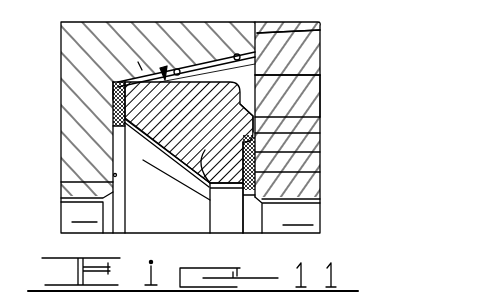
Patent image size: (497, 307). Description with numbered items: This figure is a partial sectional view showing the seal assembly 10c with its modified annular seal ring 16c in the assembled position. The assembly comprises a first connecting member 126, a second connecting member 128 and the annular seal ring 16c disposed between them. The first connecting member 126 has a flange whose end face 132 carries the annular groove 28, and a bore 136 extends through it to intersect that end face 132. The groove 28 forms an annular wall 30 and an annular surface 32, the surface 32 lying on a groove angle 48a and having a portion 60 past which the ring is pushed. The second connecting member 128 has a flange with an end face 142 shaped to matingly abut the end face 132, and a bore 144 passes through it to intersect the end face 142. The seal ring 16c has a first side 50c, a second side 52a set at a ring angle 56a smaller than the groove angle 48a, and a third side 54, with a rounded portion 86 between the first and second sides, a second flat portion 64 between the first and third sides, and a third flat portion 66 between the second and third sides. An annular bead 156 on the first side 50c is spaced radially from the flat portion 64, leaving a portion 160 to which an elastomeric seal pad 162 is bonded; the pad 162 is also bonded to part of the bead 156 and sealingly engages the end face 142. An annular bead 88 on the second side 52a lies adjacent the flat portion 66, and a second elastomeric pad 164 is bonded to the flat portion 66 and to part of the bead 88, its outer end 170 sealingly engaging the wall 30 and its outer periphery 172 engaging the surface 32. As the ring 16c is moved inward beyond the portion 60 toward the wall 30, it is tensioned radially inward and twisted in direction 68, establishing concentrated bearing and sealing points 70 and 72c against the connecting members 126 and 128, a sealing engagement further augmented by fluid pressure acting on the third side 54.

The seal assembly 10c is at (283, 15).
The first connecting member 126 is at (70, 43).
The second connecting member 128 is at (320, 60).
The rounded portion 86 is at (287, 52).
The end face 132 is at (320, 25).
The end face 142 is at (318, 72).
The first side 50c is at (317, 90).
The concentrated bearing and sealing point 72c is at (318, 114).
The annular bead 156 is at (318, 133).
The elastomeric seal pad 162 is at (317, 152).
The portion of the first side 160 is at (318, 170).
The bore 144 is at (300, 206).
The bore 136 is at (77, 200).
The annular groove 28 is at (110, 159).
The annular wall 30 is at (60, 182).
The second elastomeric pad 164 is at (118, 102).
The third flat portion 66 is at (125, 117).
The outer periphery 172 is at (113, 78).
The outer end 170 is at (112, 88).
The concentrated bearing and sealing point 70 is at (117, 80).
The annular bead 88 is at (140, 62).
The groove angle 48a is at (146, 99).
The ring angle 56a is at (180, 111).
The twisting direction 68 is at (200, 146).
The second side 52a is at (220, 60).
The annular surface 32 is at (238, 54).
The portion of the surface 60 is at (165, 60).
The annular seal ring 16c is at (197, 185).
The third side 54 is at (180, 172).
The second flat portion 64 is at (233, 190).